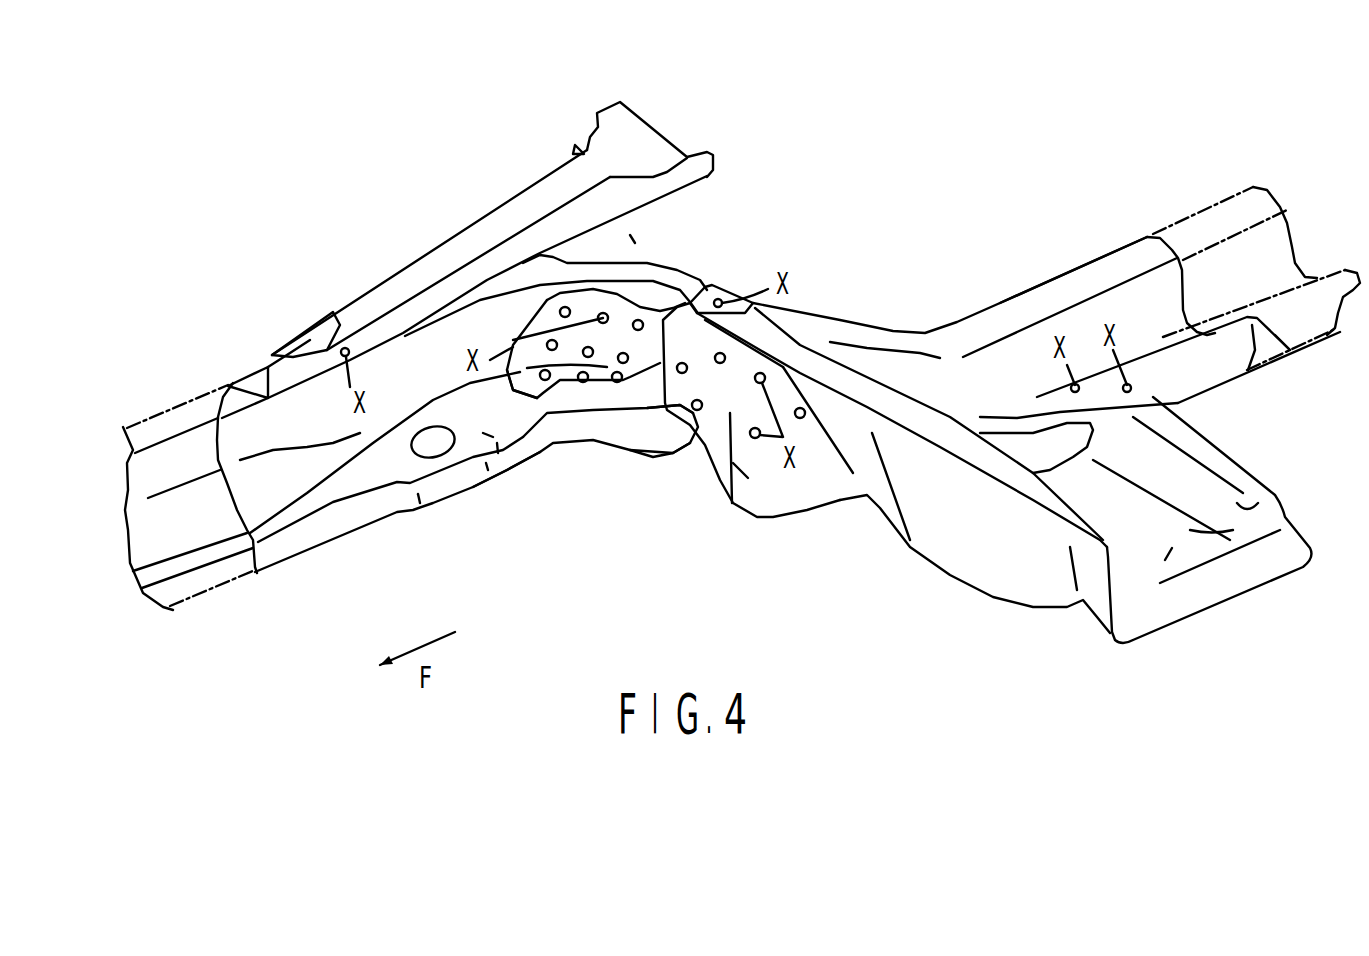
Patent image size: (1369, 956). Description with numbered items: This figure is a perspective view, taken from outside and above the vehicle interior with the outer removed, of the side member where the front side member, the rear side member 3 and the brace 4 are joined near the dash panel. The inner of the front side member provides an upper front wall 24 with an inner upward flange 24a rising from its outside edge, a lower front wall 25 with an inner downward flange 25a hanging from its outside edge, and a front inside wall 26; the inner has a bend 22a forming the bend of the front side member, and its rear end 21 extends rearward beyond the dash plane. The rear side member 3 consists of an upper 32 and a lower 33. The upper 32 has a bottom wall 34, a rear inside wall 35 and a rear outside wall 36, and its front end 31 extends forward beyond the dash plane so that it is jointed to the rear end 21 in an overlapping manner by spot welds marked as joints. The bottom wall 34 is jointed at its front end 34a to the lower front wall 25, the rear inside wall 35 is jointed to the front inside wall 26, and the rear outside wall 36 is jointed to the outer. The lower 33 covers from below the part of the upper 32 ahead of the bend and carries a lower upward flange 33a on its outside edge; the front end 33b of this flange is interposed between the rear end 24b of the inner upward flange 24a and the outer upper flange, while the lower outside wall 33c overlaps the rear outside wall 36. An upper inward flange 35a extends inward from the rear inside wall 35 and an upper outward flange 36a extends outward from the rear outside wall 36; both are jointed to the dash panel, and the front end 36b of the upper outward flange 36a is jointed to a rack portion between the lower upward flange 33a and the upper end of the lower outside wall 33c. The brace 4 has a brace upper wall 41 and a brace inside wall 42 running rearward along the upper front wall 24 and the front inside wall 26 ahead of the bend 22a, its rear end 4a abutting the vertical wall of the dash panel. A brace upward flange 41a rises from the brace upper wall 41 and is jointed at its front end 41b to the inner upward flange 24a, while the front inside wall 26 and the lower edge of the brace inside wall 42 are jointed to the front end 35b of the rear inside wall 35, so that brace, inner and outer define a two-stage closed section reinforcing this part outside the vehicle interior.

The rear side member 3 is at (882, 557).
The brace 4 is at (542, 178).
The rear end of brace 4a is at (663, 141).
The rear end of front side member 21 is at (617, 412).
The bend of inner 22a is at (527, 463).
The upper front wall 24 is at (265, 397).
The inner upward flange 24a is at (433, 312).
The rear end of inner upward flange 24b is at (705, 285).
The lower front wall 25 is at (330, 503).
The inner downward flange 25a is at (440, 488).
The front inside wall 26 is at (230, 443).
The front end of rear side member 31 is at (660, 428).
The upper 32 is at (922, 353).
The lower 33 is at (1243, 471).
The lower upward flange 33a is at (955, 453).
The front end of lower upward flange 33b is at (715, 288).
The lower outside wall 33c is at (727, 490).
The bottom wall 34 is at (1197, 335).
The front end of bottom wall 34a is at (532, 387).
The rear inside wall 35 is at (1173, 278).
The upper inward flange 35a is at (1077, 277).
The front end of rear inside wall 35b is at (547, 303).
The rear outside wall 36 is at (1213, 387).
The upper outward flange 36a is at (1292, 352).
The front end of upper outward flange 36b is at (567, 392).
The brace upper wall 41 is at (493, 220).
The brace upward flange 41a is at (617, 193).
The front end of brace upward flange 41b is at (338, 325).
The brace inside wall 42 is at (632, 238).